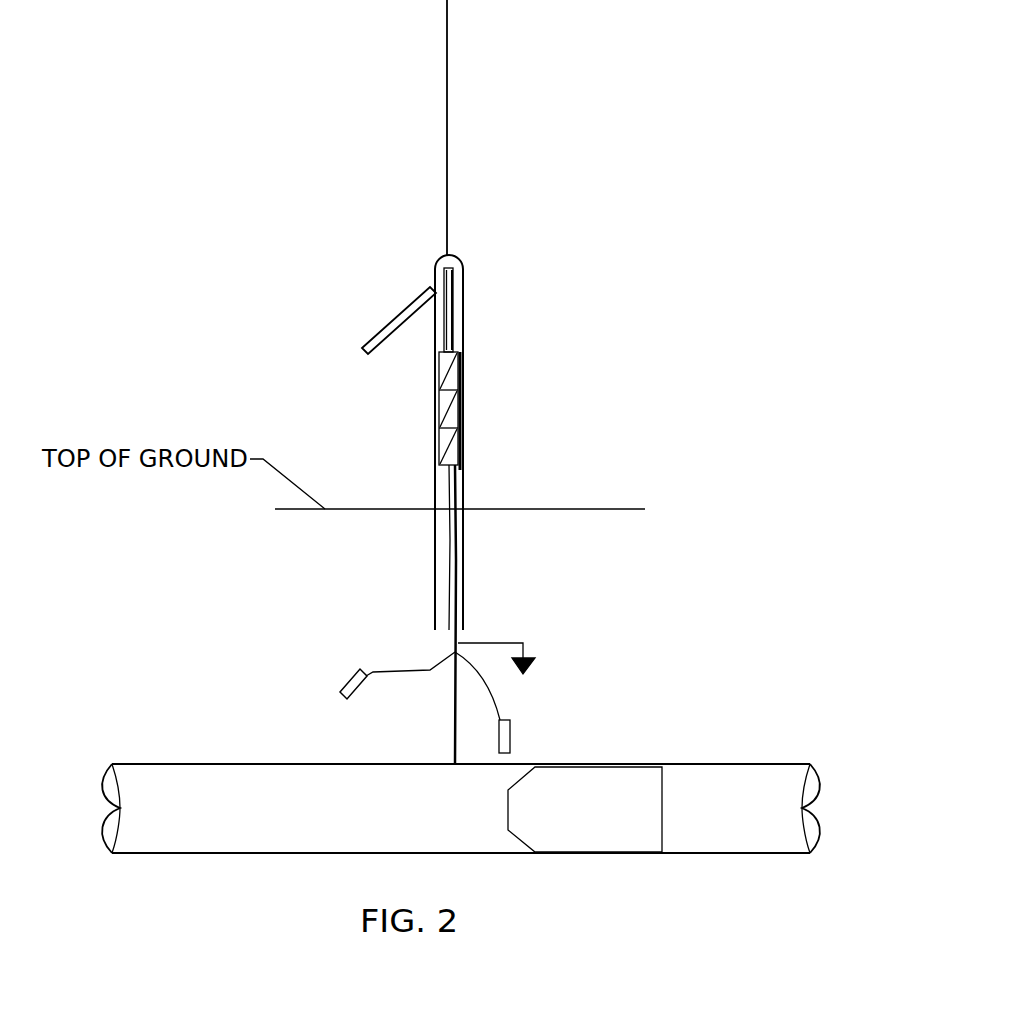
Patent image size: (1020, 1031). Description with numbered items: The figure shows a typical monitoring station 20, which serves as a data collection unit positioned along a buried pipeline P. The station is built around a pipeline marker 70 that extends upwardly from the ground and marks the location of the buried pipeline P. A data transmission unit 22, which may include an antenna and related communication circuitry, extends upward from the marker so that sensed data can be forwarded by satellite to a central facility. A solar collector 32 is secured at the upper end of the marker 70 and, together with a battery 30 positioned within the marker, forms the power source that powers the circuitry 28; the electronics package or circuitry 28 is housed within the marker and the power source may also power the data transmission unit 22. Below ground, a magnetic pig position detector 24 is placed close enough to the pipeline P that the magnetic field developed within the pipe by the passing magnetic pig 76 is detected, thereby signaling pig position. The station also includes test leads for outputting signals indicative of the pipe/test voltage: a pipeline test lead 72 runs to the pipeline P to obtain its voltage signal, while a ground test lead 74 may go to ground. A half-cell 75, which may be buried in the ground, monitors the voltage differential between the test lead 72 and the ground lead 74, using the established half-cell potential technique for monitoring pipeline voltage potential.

The monitoring station 20 is at (795, 88).
The data transmission unit 22 is at (508, 128).
The magnetic pig position detector 24 is at (540, 702).
The circuitry 28 is at (517, 287).
The battery 30 is at (512, 411).
The solar collector 32 is at (331, 312).
The pipeline marker 70 is at (530, 581).
The pipeline test lead 72 is at (362, 615).
The ground test lead 74 is at (542, 638).
The half-cell 75 is at (352, 665).
The magnetic pig 76 is at (585, 809).
The pipeline P is at (461, 774).